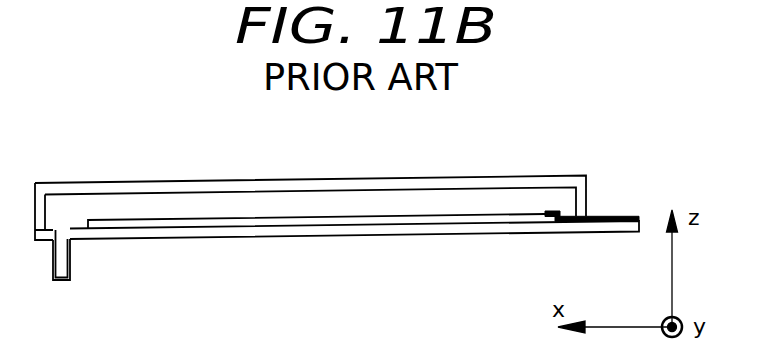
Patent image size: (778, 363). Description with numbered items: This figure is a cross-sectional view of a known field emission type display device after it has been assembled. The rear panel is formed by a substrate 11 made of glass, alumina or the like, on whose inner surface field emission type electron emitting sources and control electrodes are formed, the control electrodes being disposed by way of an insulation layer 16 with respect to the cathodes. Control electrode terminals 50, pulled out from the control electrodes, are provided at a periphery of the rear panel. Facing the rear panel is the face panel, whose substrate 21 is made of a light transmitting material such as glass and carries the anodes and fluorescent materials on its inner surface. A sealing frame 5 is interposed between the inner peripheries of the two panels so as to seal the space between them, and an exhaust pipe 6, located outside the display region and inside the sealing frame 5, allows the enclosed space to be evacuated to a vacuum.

The sealing frame 5 is at (43, 212).
The exhaust pipe 6 is at (72, 255).
The substrate 21 is at (327, 181).
The substrate 11 is at (248, 238).
The insulation layer 16 is at (373, 218).
The control electrode terminals 50 is at (612, 214).